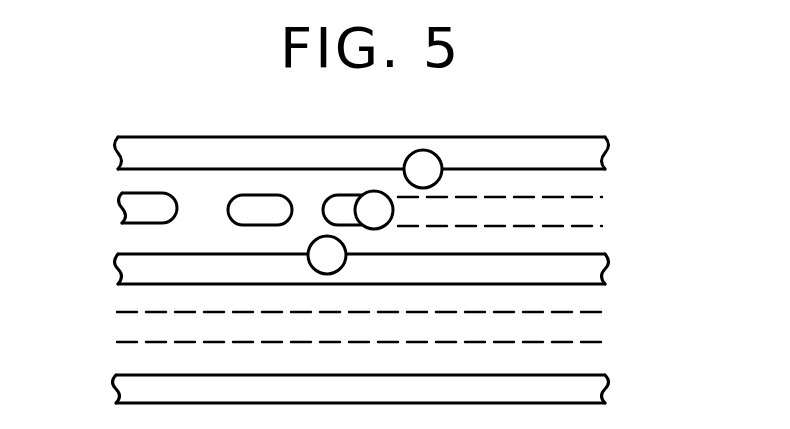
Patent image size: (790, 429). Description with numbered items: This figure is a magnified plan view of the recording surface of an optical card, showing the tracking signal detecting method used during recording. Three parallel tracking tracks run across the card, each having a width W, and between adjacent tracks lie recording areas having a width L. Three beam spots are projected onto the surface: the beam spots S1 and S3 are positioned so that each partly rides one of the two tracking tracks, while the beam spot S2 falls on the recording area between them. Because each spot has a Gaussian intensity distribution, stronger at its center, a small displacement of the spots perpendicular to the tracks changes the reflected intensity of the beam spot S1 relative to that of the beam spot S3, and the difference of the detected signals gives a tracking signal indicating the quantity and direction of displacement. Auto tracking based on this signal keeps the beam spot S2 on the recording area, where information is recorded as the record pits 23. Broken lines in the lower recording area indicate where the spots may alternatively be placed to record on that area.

The record pits 23 is at (119, 208).
The beam spot S1 is at (423, 150).
The beam spot S2 is at (364, 197).
The beam spot S3 is at (312, 247).
The width of tracking track W is at (118, 169).
The width of recording area L is at (110, 372).